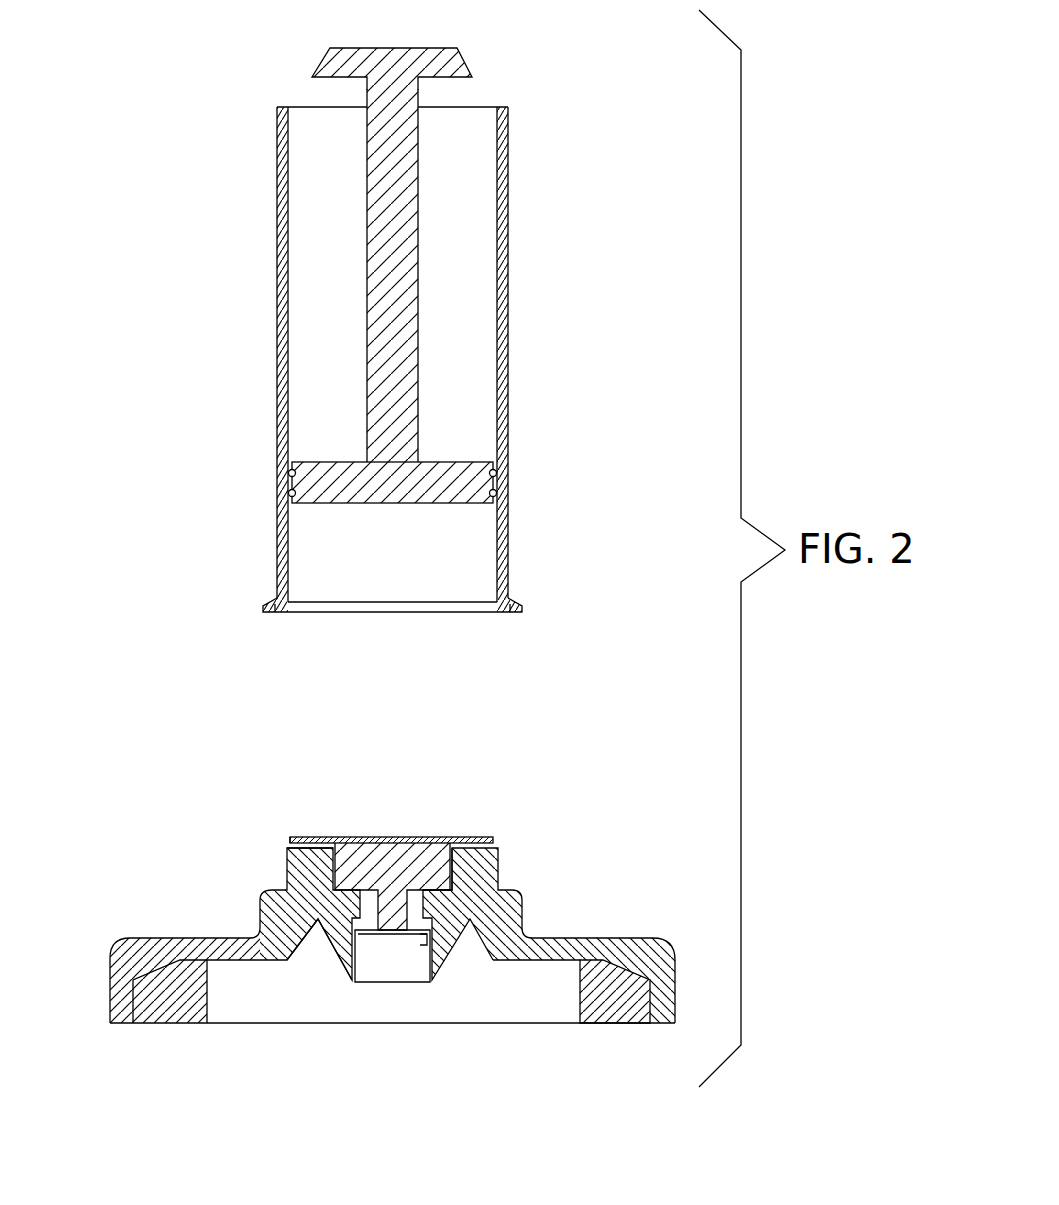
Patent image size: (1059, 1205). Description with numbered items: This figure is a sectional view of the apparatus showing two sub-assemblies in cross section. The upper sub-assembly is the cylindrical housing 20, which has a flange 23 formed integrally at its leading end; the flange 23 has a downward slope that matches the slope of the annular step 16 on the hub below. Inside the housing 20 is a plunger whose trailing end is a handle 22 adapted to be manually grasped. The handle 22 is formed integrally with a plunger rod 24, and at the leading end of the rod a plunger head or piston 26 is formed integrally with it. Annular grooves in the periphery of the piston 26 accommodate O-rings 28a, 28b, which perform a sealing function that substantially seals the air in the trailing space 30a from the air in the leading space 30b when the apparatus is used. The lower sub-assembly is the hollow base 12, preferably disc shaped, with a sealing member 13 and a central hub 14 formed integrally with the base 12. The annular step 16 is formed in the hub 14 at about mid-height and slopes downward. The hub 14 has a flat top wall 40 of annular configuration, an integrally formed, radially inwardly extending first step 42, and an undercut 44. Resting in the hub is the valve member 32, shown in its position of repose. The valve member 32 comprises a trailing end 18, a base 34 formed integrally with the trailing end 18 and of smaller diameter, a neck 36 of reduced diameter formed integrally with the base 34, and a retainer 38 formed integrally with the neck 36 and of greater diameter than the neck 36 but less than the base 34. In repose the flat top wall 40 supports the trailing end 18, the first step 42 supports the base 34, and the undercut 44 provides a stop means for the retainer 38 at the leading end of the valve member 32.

The hollow base 12 is at (150, 934).
The sealing member 13 is at (578, 1000).
The central hub 14 is at (244, 884).
The annular step 16 is at (512, 888).
The trailing end 18 is at (480, 837).
The cylindrical housing 20 is at (508, 186).
The handle 22 is at (422, 47).
The flange 23 is at (521, 603).
The plunger rod 24 is at (418, 176).
The piston 26 is at (462, 462).
The O-ring 28a is at (288, 471).
The O-ring 28b is at (497, 494).
The trailing space 30a is at (316, 285).
The leading space 30b is at (330, 561).
The valve member 32 is at (316, 834).
The base 34 is at (407, 842).
The neck 36 is at (320, 924).
The retainer 38 is at (386, 935).
The flat top wall 40 is at (291, 838).
The first step 42 is at (437, 893).
The undercut 44 is at (417, 935).